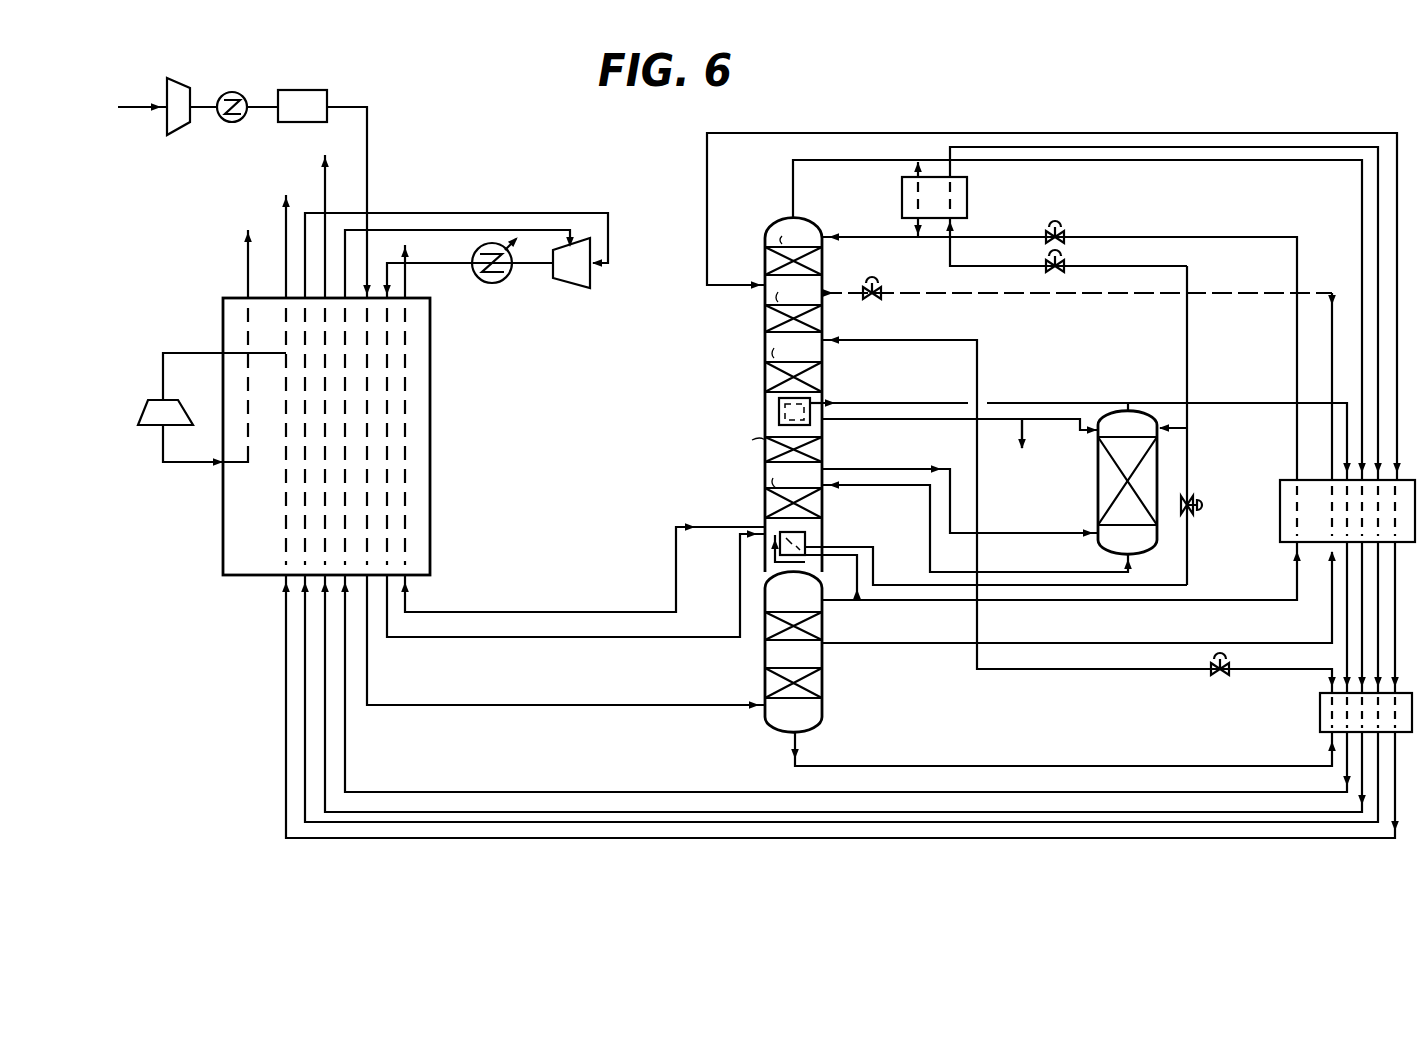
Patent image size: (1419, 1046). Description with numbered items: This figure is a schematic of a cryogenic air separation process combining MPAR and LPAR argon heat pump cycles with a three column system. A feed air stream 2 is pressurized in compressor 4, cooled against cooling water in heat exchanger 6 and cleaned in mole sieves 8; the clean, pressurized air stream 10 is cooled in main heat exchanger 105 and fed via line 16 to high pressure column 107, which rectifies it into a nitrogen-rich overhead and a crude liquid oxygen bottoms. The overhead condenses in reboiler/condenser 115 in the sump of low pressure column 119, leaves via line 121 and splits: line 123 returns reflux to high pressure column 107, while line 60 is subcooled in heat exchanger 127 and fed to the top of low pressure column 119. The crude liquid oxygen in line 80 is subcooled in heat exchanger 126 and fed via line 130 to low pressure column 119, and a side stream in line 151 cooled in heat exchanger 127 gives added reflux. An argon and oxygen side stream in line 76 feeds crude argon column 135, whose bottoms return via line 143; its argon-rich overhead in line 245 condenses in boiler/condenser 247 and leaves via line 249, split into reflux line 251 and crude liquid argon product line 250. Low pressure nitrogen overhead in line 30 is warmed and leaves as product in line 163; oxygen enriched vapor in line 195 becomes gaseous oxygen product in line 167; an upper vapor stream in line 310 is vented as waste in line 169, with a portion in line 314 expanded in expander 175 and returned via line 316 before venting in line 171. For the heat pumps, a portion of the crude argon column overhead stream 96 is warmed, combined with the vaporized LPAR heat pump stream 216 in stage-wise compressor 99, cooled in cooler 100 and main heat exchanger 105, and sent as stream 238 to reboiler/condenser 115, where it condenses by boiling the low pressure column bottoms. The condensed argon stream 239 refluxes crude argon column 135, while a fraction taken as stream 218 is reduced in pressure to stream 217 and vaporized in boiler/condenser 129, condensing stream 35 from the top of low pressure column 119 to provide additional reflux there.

The feed air stream 2 is at (147, 98).
The compressor 4 is at (179, 88).
The heat exchanger 6 is at (233, 92).
The mole sieves 8 is at (295, 90).
The clean, pressurized air stream 10 is at (368, 208).
The line 16 is at (566, 642).
The line 30 is at (795, 208).
The stream 35 is at (912, 172).
The line 60 is at (1235, 600).
The line 76 is at (887, 474).
The line 80 is at (1135, 767).
The crude argon column overhead stream 96 is at (1213, 403).
The compressor 99 is at (565, 284).
The cooler 100 is at (486, 283).
The main heat exchanger 105 is at (223, 541).
The high pressure column 107 is at (822, 655).
The reboiler/condenser 115 is at (996, 566).
The low pressure column 119 is at (765, 350).
The line 121 is at (852, 584).
The line 123 is at (834, 601).
The heat exchanger 126 is at (1318, 700).
The heat exchanger 127 is at (1310, 548).
The boiler/condenser 129 is at (968, 200).
The line 130 is at (870, 342).
The crude argon column 135 is at (1098, 462).
The line 143 is at (1050, 574).
The line 151 is at (1143, 644).
The line 163 is at (337, 200).
The line 167 is at (408, 279).
The line 169 is at (282, 253).
The line 171 is at (249, 262).
The expander 175 is at (150, 402).
The line 195 is at (730, 530).
The vaporized LPAR heat pump stream 216 is at (950, 151).
The stream 217 is at (978, 268).
The stream 218 is at (1189, 335).
The stream 238 is at (576, 600).
The condensed argon stream 239 is at (1190, 490).
The line 245 is at (1103, 403).
The boiler/condenser 247 is at (823, 403).
The line 249 is at (868, 419).
The line 250 is at (1022, 432).
The line 251 is at (1045, 418).
The line 310 is at (707, 220).
The line 314 is at (197, 353).
The line 316 is at (190, 464).